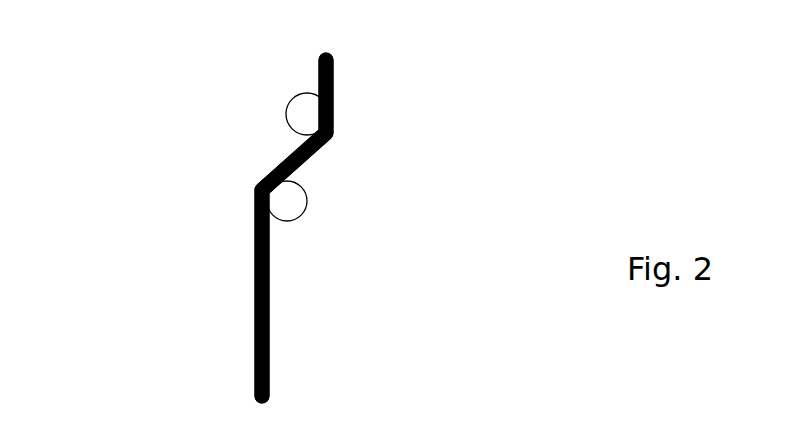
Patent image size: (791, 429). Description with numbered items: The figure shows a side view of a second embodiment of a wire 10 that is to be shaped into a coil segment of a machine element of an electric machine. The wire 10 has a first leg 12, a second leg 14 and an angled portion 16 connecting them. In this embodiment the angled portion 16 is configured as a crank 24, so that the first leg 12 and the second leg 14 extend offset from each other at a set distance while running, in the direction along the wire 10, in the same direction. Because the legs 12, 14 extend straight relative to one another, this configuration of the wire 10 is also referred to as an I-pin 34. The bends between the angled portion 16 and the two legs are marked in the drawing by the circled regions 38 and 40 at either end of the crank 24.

The wire 10 is at (145, 130).
The first leg 12 is at (335, 95).
The second leg 14 is at (256, 293).
The angled portion 16 is at (260, 124).
The crank 24 is at (262, 160).
The I-pin 34 is at (492, 191).
The first bend angle 38 is at (302, 108).
The second bend angle 40 is at (298, 207).